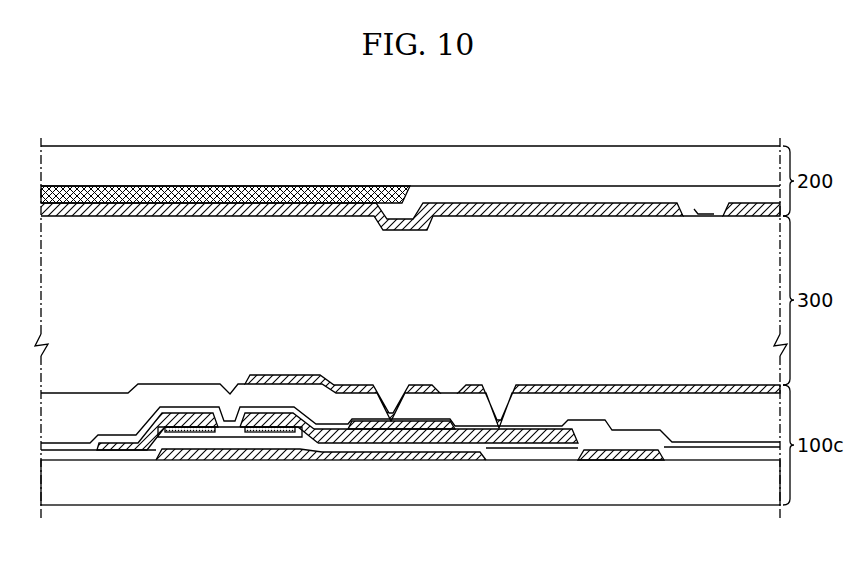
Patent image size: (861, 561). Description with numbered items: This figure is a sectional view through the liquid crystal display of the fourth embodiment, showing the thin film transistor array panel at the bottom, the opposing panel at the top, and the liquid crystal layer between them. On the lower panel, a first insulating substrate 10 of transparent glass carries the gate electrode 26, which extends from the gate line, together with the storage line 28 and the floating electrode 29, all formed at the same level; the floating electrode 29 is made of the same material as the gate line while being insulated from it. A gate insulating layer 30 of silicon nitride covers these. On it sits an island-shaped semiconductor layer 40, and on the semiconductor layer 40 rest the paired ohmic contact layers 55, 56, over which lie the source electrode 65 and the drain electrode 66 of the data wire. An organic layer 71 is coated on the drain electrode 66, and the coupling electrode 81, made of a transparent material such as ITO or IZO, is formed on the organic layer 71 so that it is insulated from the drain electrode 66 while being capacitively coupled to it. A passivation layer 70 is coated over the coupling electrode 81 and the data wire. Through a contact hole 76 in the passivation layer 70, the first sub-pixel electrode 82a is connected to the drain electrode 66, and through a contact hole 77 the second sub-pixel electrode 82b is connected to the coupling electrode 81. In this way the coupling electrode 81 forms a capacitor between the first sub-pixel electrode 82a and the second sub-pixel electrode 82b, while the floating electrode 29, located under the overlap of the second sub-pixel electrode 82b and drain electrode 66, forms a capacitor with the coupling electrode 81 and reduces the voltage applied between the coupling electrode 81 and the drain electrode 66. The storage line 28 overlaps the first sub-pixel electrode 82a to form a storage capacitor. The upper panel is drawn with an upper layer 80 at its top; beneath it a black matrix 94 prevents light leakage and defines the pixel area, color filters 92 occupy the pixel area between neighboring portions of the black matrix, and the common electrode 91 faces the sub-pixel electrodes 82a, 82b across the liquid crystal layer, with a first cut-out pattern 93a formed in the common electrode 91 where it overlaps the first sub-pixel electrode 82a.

The first insulating substrate 10 is at (733, 478).
The gate electrode 26 is at (286, 458).
The storage line 28 is at (612, 460).
The floating electrode 29 is at (350, 460).
The gate insulating layer 30 is at (508, 455).
The semiconductor layer 40 is at (172, 438).
The ohmic contact layer 55 is at (202, 432).
The ohmic contact layer 56 is at (256, 432).
The source electrode 65 is at (185, 428).
The drain electrode 66 is at (272, 422).
The passivation layer 70 is at (705, 425).
The organic layer 71 is at (678, 449).
The contact hole 76 is at (510, 370).
The contact hole 77 is at (400, 370).
The encapsulation substrate 80 is at (752, 178).
The coupling electrode 81 is at (455, 438).
The first sub-pixel electrode 82a is at (548, 438).
The second sub-pixel electrode 82b is at (418, 428).
The common electrode 91 is at (542, 203).
The color filter 92 is at (455, 203).
The first cut-out pattern 93a is at (698, 208).
The black matrix 94 is at (330, 186).